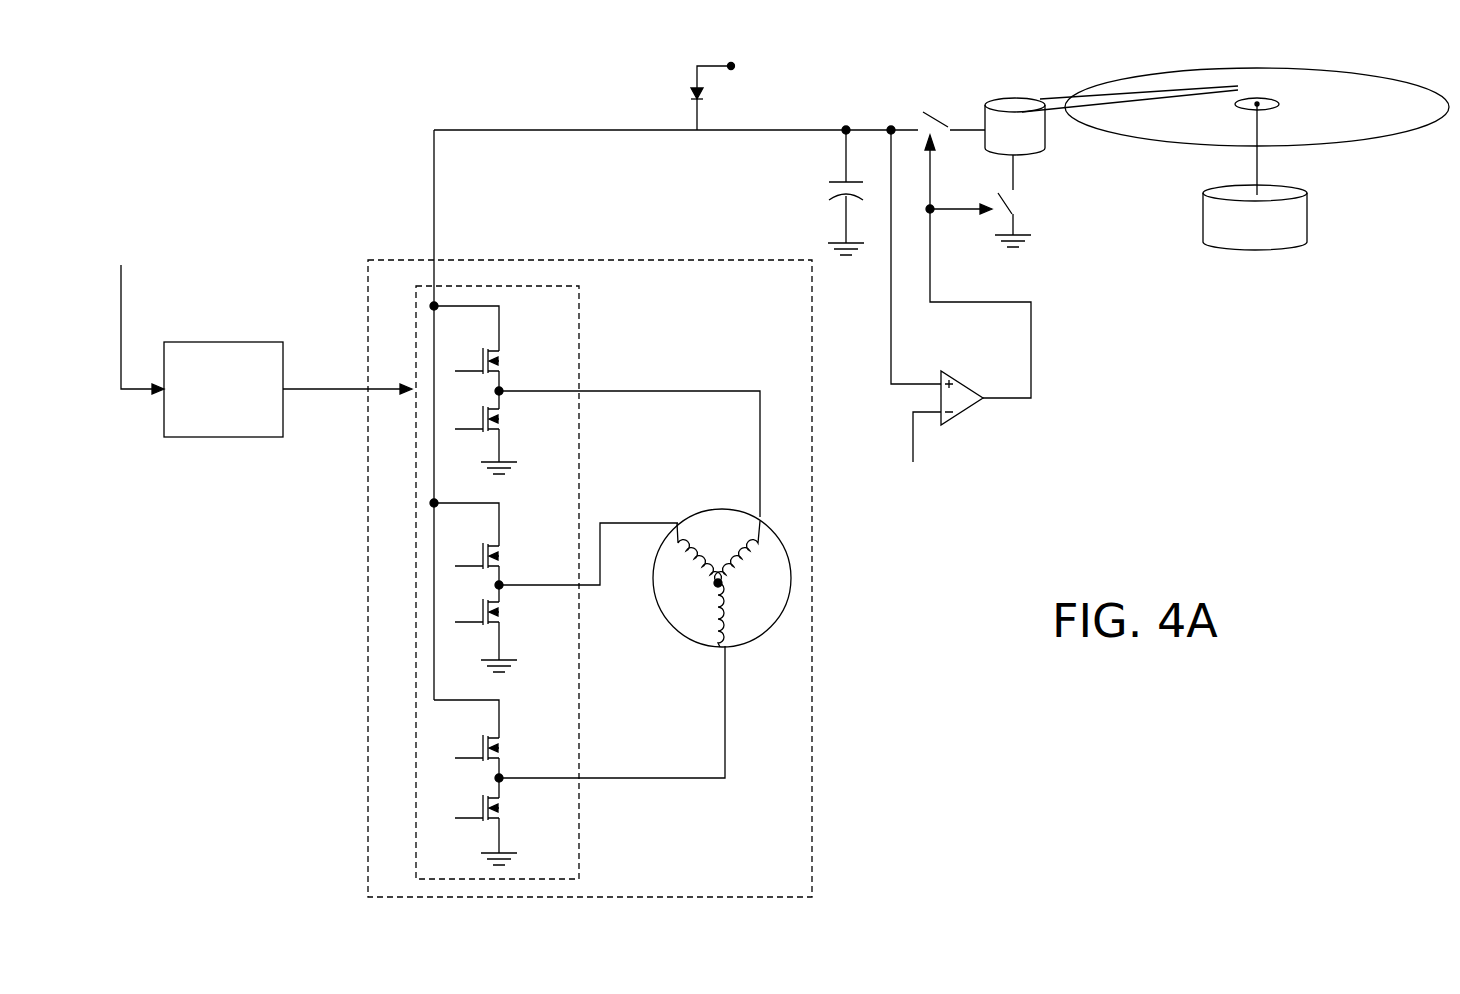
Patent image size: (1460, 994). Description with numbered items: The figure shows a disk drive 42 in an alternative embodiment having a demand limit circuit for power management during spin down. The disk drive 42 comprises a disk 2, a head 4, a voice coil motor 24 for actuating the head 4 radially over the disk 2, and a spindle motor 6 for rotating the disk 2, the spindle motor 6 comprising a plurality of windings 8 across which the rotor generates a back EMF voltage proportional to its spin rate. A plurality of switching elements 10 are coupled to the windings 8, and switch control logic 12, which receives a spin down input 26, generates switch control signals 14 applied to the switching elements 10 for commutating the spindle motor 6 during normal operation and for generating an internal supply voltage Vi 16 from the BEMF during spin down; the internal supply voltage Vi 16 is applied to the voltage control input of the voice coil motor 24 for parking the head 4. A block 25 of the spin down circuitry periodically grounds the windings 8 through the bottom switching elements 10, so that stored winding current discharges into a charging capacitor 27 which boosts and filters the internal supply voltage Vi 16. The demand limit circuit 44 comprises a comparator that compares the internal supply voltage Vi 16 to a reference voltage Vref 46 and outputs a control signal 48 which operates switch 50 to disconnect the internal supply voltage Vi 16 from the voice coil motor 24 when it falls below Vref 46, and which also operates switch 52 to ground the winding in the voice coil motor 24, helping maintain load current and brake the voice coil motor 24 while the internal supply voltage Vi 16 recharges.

The disk 2 is at (1417, 96).
The head 4 is at (1240, 87).
The spindle motor 6 is at (1310, 220).
The windings 8 is at (750, 646).
The switching elements 10 is at (579, 337).
The switch control logic 12 is at (227, 342).
The switch control signals 14 is at (325, 387).
The internal supply voltage Vi 16 is at (808, 128).
The voice coil motor 24 is at (1009, 100).
The block of the spin down circuitry 25 is at (368, 622).
The spin down signal line 26 is at (125, 283).
The charging capacitor 27 is at (827, 189).
The disk drive 42 is at (320, 166).
The demand limit circuit 44 is at (945, 370).
The reference voltage Vref 46 is at (913, 437).
The control signal 48 is at (1031, 338).
The switch 50 is at (932, 108).
The switch 52 is at (1027, 207).